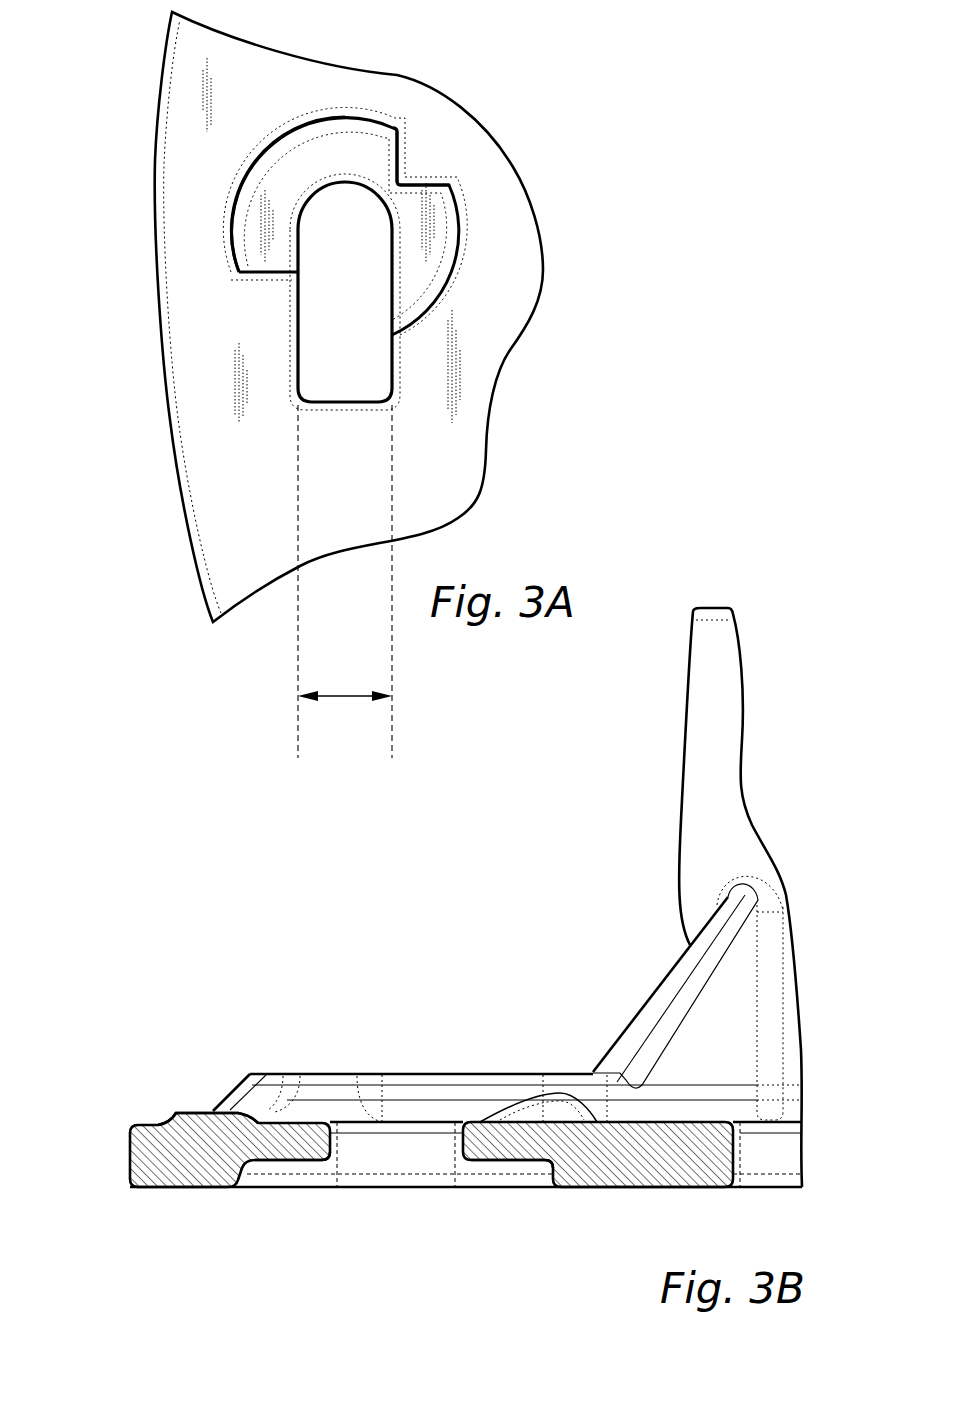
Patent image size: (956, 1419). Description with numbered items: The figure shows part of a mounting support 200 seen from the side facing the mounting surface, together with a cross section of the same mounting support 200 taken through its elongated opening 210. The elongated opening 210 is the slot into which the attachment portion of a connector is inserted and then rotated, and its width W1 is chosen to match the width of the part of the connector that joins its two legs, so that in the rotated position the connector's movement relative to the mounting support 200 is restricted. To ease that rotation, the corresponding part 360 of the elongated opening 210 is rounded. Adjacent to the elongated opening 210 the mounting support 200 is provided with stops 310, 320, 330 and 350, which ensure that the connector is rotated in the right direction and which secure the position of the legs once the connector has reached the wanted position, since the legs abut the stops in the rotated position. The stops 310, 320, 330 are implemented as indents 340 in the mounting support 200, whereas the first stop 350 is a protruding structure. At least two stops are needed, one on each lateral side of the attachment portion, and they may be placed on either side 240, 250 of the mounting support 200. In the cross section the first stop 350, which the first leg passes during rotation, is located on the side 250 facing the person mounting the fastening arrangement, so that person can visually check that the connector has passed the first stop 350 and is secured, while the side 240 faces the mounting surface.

In FIG. 3A, the mounting support 200 is at (440, 117).
In FIG. 3A, the elongated opening 210 is at (363, 351).
In FIG. 3B, the elongated opening 210 is at (432, 1153).
In FIG. 3A, the side of the mounting support 240 is at (197, 428).
In FIG. 3B, the side of the mounting support 240 is at (170, 1187).
In FIG. 3B, the side of the mounting support 250 is at (183, 1110).
In FIG. 3A, the stop 310 is at (440, 175).
In FIG. 3A, the stop 320 is at (387, 157).
In FIG. 3A, the stop 330 is at (240, 273).
In FIG. 3A, the indents 340 is at (277, 222).
In FIG. 3B, the indents 340 is at (287, 1167).
In FIG. 3B, the first stop 350 is at (565, 1108).
In FIG. 3A, the rounded part of the elongated opening 360 is at (362, 197).